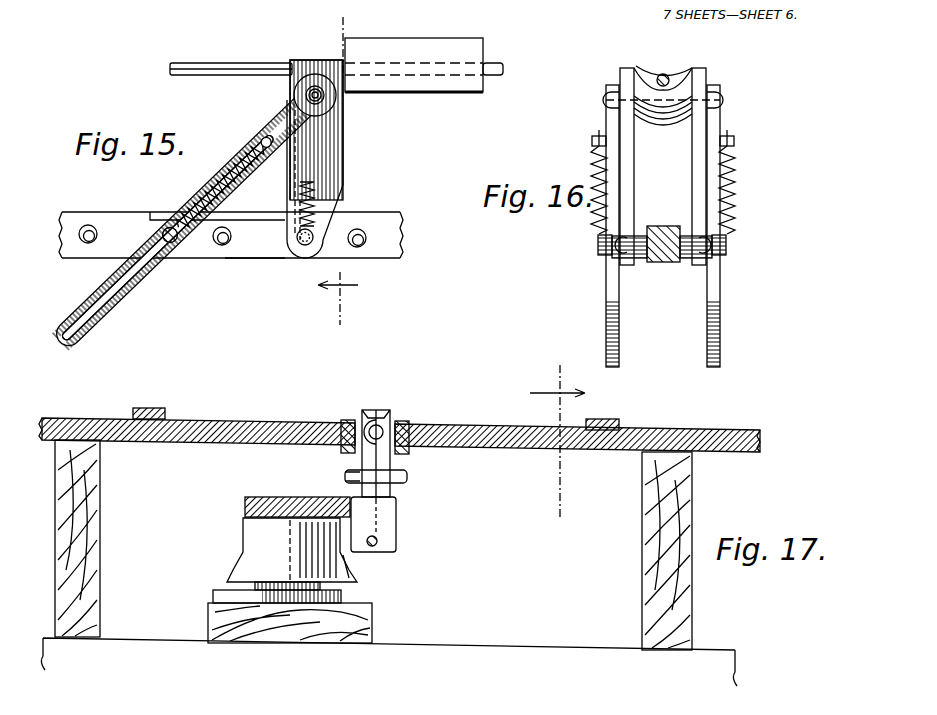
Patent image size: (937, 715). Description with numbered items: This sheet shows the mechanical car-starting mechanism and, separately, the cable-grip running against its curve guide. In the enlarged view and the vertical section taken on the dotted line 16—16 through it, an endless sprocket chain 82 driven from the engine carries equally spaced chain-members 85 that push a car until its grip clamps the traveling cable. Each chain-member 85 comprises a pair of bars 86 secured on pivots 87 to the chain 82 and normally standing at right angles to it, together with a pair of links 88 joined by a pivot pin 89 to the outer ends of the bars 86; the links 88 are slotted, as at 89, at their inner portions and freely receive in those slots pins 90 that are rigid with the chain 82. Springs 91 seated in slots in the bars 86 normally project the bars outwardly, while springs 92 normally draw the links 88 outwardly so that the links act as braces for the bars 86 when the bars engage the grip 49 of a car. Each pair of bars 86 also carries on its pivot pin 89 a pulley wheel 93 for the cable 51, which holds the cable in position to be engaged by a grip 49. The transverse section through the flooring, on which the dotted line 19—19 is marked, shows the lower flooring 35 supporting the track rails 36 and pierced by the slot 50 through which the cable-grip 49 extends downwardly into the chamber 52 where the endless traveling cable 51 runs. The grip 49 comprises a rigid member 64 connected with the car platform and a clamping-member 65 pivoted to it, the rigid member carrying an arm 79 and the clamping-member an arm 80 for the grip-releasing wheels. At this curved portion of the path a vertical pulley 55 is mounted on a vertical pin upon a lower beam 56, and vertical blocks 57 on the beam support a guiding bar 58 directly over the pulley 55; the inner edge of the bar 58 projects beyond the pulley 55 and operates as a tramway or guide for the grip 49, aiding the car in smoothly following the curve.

In FIG. 15, the section line 16— 16 is at (343, 173).
In FIG. 17, the section line 19— 19 is at (557, 442).
In FIG. 17, the lower flooring 35 is at (399, 424).
In FIG. 17, the track rails 36 is at (165, 410).
In FIG. 15, the cable-grip 49 is at (507, 34).
In FIG. 17, the cable-grip 49 is at (401, 461).
In FIG. 17, the slot 50 is at (392, 418).
In FIG. 15, the endless traveling cable 51 is at (503, 70).
In FIG. 16, the endless traveling cable 51 is at (676, 60).
In FIG. 17, the endless traveling cable 51 is at (378, 540).
In FIG. 17, the chamber 52 is at (389, 563).
In FIG. 17, the vertical pulleys 55 is at (262, 542).
In FIG. 17, the lower beams 56 is at (365, 626).
In FIG. 17, the vertical blocks 57 is at (236, 572).
In FIG. 17, the guiding bar 58 is at (268, 497).
In FIG. 17, the rigid member 64 is at (370, 552).
In FIG. 15, the clamping-member 65 is at (438, 36).
In FIG. 17, the clamping-member 65 is at (390, 552).
In FIG. 17, the arm 79 is at (407, 476).
In FIG. 17, the arm 80 is at (345, 476).
In FIG. 15, the endless sprocket chain 82 is at (400, 250).
In FIG. 16, the endless sprocket chain 82 is at (662, 262).
In FIG. 15, the chain-members 85 is at (236, 52).
In FIG. 16, the chain-members 85 is at (639, 83).
In FIG. 15, the bars 86 is at (345, 130).
In FIG. 16, the bars 86 is at (680, 158).
In FIG. 15, the pivots 87 is at (302, 245).
In FIG. 16, the pivots 87 is at (700, 242).
In FIG. 15, the links 88 is at (150, 282).
In FIG. 16, the links 88 is at (606, 300).
In FIG. 15, the pivot pin and slot 89 is at (292, 97).
In FIG. 16, the pivot pin and slot 89 is at (722, 102).
In FIG. 15, the pins 90 is at (180, 243).
In FIG. 16, the pins 90 is at (598, 245).
In FIG. 15, the springs 91 is at (314, 200).
In FIG. 15, the springs 92 is at (210, 196).
In FIG. 16, the springs 92 is at (736, 192).
In FIG. 16, the pulley wheel 93 is at (690, 70).